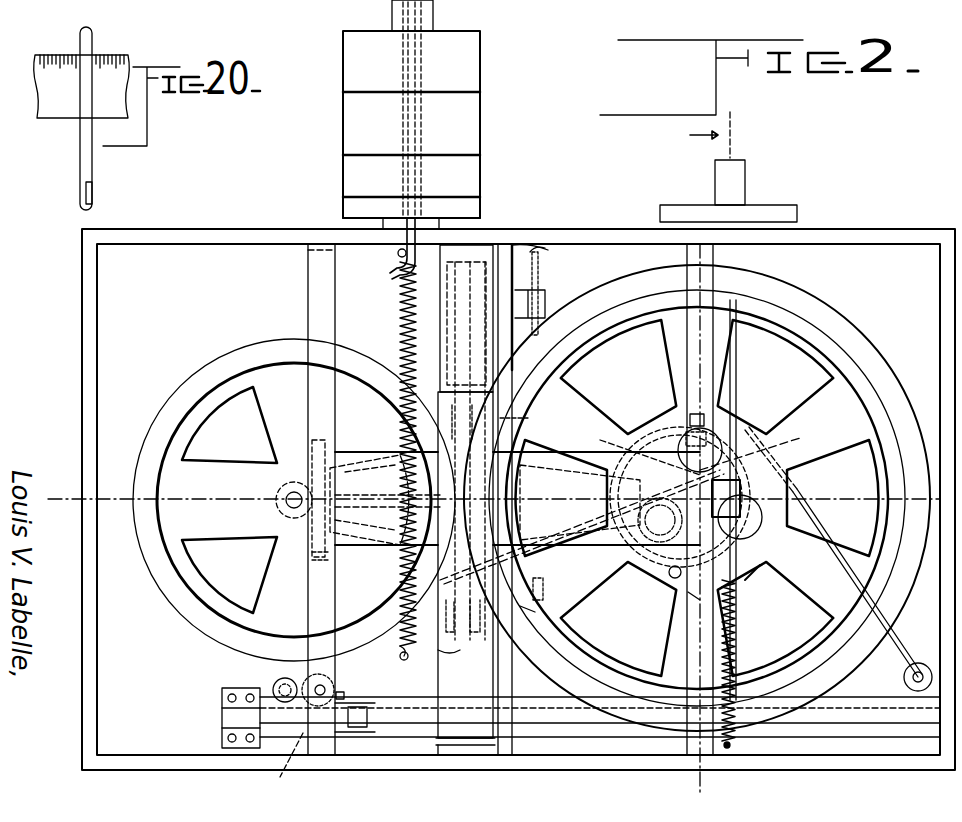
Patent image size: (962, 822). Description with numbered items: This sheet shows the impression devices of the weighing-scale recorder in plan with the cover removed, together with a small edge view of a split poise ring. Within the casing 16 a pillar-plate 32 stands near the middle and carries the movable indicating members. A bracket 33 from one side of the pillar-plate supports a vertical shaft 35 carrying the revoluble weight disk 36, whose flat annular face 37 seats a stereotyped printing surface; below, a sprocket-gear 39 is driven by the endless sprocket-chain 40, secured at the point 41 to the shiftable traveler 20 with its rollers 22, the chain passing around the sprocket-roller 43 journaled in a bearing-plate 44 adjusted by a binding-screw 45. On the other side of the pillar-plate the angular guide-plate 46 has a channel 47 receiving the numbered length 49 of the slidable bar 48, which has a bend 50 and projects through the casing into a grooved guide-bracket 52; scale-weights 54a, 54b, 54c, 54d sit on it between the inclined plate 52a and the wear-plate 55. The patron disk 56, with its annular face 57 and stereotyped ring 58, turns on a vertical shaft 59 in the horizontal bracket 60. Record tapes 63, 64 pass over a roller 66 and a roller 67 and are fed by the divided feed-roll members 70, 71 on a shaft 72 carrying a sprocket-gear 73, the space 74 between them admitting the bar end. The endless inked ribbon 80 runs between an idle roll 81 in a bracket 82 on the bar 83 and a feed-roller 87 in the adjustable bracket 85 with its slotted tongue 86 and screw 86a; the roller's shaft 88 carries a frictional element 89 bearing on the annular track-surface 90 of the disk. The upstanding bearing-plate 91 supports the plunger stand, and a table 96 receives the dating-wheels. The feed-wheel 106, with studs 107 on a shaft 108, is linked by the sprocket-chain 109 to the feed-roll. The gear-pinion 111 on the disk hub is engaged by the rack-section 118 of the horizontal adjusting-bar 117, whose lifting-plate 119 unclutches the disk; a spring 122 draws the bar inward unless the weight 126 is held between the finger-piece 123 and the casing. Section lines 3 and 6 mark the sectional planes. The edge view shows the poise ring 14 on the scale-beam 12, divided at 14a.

In FIG. 2, the section line 3 is at (494, 500).
In FIG. 2, the section line 6 is at (714, 452).
In FIG. 20, the scale-beam 12 is at (53, 123).
In FIG. 20, the poise ring or hanger 14 is at (92, 47).
In FIG. 20, the division of the ring 14a is at (92, 205).
In FIG. 2, the casing 16 is at (163, 240).
In FIG. 2, the shiftable traveler 20 is at (375, 700).
In FIG. 2, the rollers 22 is at (392, 778).
In FIG. 2, the pillar-plate 32 is at (508, 690).
In FIG. 2, the bracket 33 is at (580, 502).
In FIG. 2, the vertical shaft 35 is at (690, 502).
In FIG. 2, the revoluble disk 36 is at (868, 342).
In FIG. 2, the flat annular face 37 is at (905, 468).
In FIG. 2, the sprocket-gear 39 is at (752, 571).
In FIG. 2, the endless sprocket-chain 40 is at (838, 559).
In FIG. 2, the chain attachment point 41 is at (344, 697).
In FIG. 2, the sprocket-roller 43 is at (333, 680).
In FIG. 2, the bearing-plate 44 is at (279, 680).
In FIG. 2, the binding-screw 45 is at (272, 683).
In FIG. 2, the angular guide-plate 46 is at (412, 445).
In FIG. 2, the channel or groove 47 is at (475, 421).
In FIG. 2, the slidable bar 48 is at (383, 225).
In FIG. 2, the length of slidable bar 49 is at (447, 421).
In FIG. 2, the bend or offset 50 is at (398, 262).
In FIG. 2, the grooved guide-bracket 52 is at (425, 57).
In FIG. 2, the inclined plate 52a is at (435, 15).
In FIG. 2, the scale-weight 54a is at (350, 60).
In FIG. 2, the scale-weight 54b is at (389, 123).
In FIG. 2, the scale-weight 54c is at (345, 165).
In FIG. 2, the scale-weight 54d is at (470, 207).
In FIG. 2, the wear-plate 55 is at (440, 220).
In FIG. 2, the patron-impression disk 56 is at (240, 350).
In FIG. 2, the flat annular face 57 is at (183, 433).
In FIG. 2, the stereotyped plate or ring 58 is at (398, 330).
In FIG. 2, the vertical shaft 59 is at (290, 506).
In FIG. 2, the horizontal bracket 60 is at (395, 468).
In FIG. 2, the record tape or ribbon 63 is at (416, 634).
In FIG. 2, the record tape or ribbon 64 is at (439, 661).
In FIG. 2, the roller 66 is at (467, 318).
In FIG. 2, the roller 67 is at (438, 745).
In FIG. 2, the feed-roll member 70 is at (481, 630).
In FIG. 2, the feed-roll member 71 is at (453, 630).
In FIG. 2, the horizontal shaft 72 is at (543, 590).
In FIG. 2, the sprocket-gear 73 is at (536, 612).
In FIG. 2, the intermediate space 74 is at (465, 568).
In FIG. 2, the endless inked ribbon 80 is at (592, 452).
In FIG. 2, the idle roll 81 is at (318, 553).
In FIG. 2, the bracket 82 is at (318, 578).
In FIG. 2, the bar 83 is at (318, 295).
In FIG. 2, the adjustable bracket 85 is at (690, 598).
In FIG. 2, the slotted tongue 86 is at (742, 472).
In FIG. 2, the adjustable screw 86a is at (762, 535).
In FIG. 2, the feed-roller 87 is at (672, 578).
In FIG. 2, the shaft 88 is at (688, 438).
In FIG. 2, the frictional element 89 is at (690, 418).
In FIG. 2, the annular track-surface 90 is at (722, 418).
In FIG. 2, the upstanding bearing-plate 91 is at (474, 451).
In FIG. 2, the table 96 is at (400, 565).
In FIG. 2, the feed-wheel 106 is at (548, 250).
In FIG. 2, the pins or studs 107 is at (538, 280).
In FIG. 2, the shaft 108 is at (517, 305).
In FIG. 2, the endless sprocket-chain 109 is at (530, 418).
In FIG. 2, the gear-pinion 111 is at (680, 497).
In FIG. 2, the horizontal adjusting-bar 117 is at (736, 362).
In FIG. 2, the rack-section 118 is at (800, 438).
In FIG. 2, the lifting-plate 119 is at (680, 446).
In FIG. 2, the spring 122 is at (736, 625).
In FIG. 2, the finger-piece 123 is at (740, 186).
In FIG. 2, the weight 126 is at (800, 210).